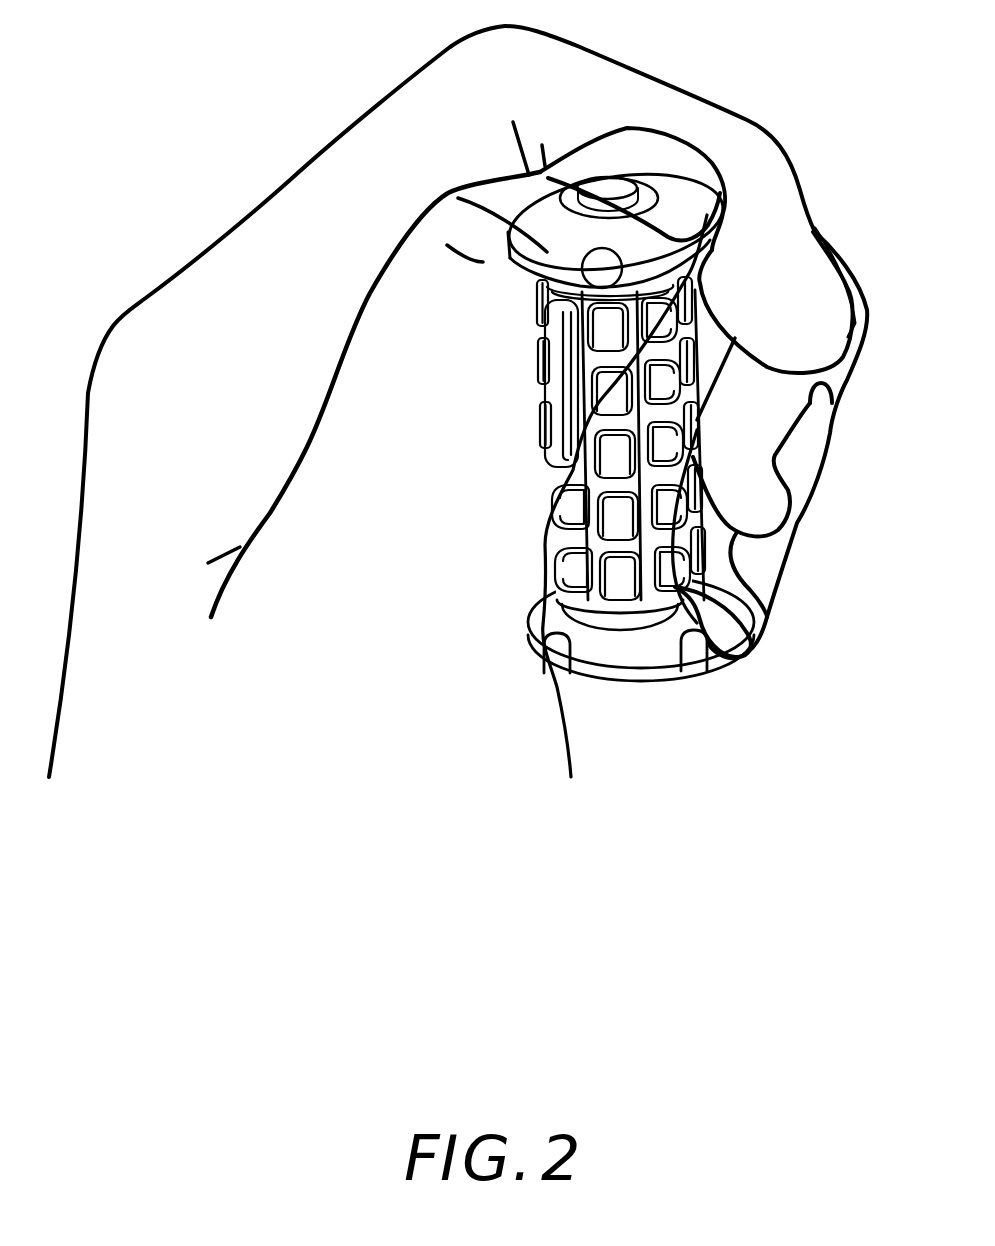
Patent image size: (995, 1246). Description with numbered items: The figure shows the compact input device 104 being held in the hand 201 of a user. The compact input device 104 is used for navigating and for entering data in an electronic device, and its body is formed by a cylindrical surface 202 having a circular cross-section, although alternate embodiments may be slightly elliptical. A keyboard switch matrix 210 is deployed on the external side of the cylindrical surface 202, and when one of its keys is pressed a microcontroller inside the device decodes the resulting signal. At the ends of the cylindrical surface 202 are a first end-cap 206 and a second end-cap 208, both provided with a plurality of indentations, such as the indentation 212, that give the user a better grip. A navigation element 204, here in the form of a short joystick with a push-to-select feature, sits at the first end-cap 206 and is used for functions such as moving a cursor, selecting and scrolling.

The compact input device 104 is at (752, 691).
The hand 201 is at (93, 389).
The cylindrical surface 202 is at (672, 412).
The navigation element 204 is at (611, 180).
The first end-cap 206 is at (713, 193).
The second end-cap 208 is at (625, 667).
The keyboard switch matrix 210 is at (672, 443).
The indentation 212 is at (698, 660).